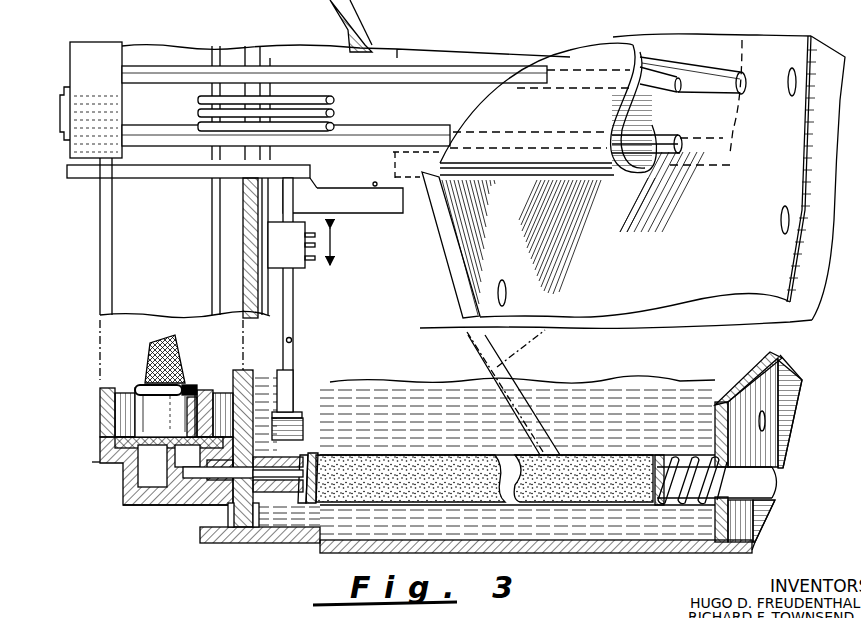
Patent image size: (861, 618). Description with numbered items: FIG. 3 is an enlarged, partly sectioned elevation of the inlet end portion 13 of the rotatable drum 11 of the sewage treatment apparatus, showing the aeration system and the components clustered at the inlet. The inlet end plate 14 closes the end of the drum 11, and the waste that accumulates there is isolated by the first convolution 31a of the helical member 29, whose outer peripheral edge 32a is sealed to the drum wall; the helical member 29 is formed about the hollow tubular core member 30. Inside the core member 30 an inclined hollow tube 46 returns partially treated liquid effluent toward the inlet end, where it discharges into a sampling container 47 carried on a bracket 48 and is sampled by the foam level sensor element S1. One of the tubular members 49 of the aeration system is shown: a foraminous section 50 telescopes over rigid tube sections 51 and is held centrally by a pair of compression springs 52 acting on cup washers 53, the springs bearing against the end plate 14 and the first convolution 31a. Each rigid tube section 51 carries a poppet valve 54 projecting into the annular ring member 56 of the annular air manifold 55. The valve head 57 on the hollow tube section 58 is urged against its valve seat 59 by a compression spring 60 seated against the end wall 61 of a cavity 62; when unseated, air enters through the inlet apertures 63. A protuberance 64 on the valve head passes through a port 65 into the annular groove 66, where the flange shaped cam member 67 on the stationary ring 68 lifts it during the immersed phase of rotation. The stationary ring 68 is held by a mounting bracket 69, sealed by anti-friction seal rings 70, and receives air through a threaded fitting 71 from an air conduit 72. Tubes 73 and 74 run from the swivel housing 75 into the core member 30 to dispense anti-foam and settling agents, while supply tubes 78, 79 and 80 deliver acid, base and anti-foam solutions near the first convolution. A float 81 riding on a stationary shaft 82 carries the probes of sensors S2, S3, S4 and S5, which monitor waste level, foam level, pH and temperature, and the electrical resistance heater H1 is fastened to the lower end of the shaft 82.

The drum 11 is at (316, 55).
The inlet end portion 13 is at (323, 553).
The drum inlet end plate 14 is at (243, 240).
The helical member 29 is at (545, 400).
The hollow tubular core member 30 is at (563, 180).
The first convolution 31a is at (806, 370).
The outer peripheral edge 32a is at (600, 330).
The hollow tube 46 is at (468, 56).
The sampling container 47 is at (337, 192).
The bracket 48 is at (150, 172).
The tubular members 49 is at (420, 450).
The foraminous sections 50 is at (600, 455).
The rigid hollow nonforaminous tube section 51 is at (765, 477).
The compression springs 52 is at (310, 455).
The cup washers 53 is at (318, 470).
The poppet valves 54 is at (205, 483).
The annular air manifold 55 is at (97, 462).
The annular ring member 56 is at (120, 506).
The valve head 57 is at (213, 544).
The hollow tube section 58 is at (239, 543).
The valve seat 59 is at (215, 482).
The compression spring 60 is at (240, 380).
The end wall 61 is at (231, 505).
The cavity 62 is at (250, 380).
The inlet apertures 63 is at (240, 505).
The protuberance 64 is at (150, 508).
The port 65 is at (182, 472).
The annular groove 66 is at (152, 475).
The flange shaped cam member 67 is at (147, 460).
The stationary ring 68 is at (126, 388).
The mounting bracket 69 is at (118, 392).
The anti-friction seal rings 70 is at (105, 420).
The threaded fitting 71 is at (186, 382).
The air conduit 72 is at (182, 347).
The tube 73 is at (155, 128).
The tube 74 is at (165, 67).
The swivel housing 75 is at (92, 55).
The supply tube 78 is at (215, 95).
The supply tube 79 is at (220, 108).
The supply tube 80 is at (243, 124).
The float 81 is at (296, 226).
The shaft 82 is at (293, 338).
The electrical resistance heater H1 is at (300, 425).
The foam level sensor element S1 is at (375, 182).
The sensor S2 is at (314, 234).
The sensor S3 is at (305, 236).
The sensor S4 is at (305, 246).
The sensor S5 is at (313, 272).